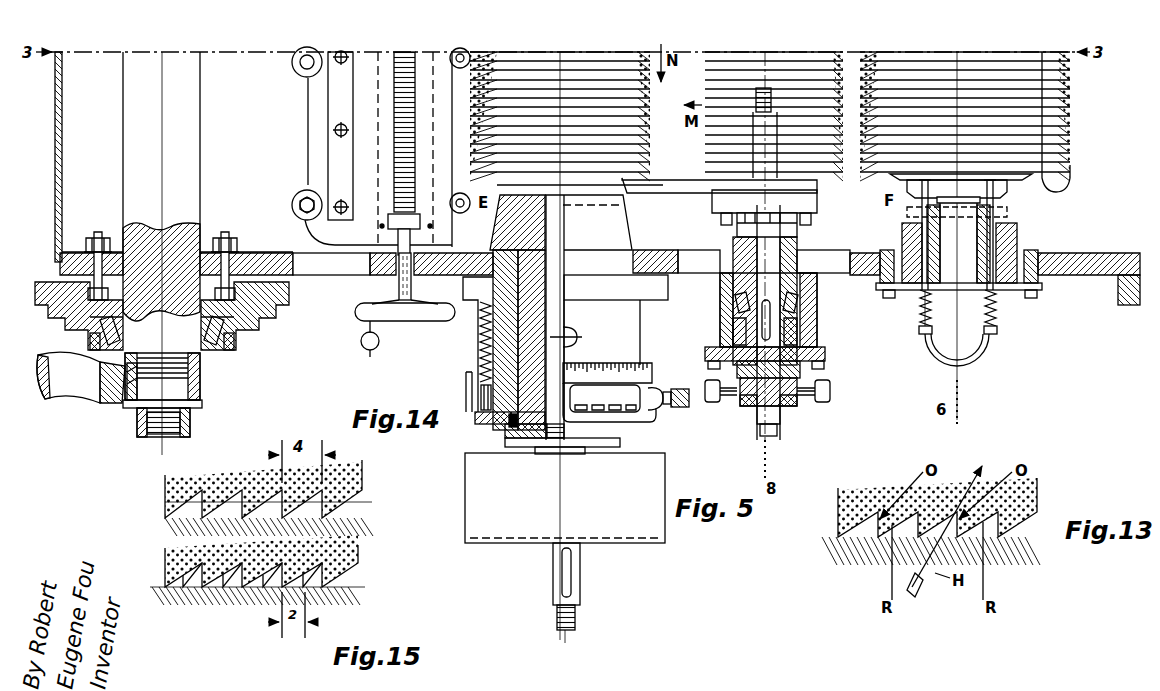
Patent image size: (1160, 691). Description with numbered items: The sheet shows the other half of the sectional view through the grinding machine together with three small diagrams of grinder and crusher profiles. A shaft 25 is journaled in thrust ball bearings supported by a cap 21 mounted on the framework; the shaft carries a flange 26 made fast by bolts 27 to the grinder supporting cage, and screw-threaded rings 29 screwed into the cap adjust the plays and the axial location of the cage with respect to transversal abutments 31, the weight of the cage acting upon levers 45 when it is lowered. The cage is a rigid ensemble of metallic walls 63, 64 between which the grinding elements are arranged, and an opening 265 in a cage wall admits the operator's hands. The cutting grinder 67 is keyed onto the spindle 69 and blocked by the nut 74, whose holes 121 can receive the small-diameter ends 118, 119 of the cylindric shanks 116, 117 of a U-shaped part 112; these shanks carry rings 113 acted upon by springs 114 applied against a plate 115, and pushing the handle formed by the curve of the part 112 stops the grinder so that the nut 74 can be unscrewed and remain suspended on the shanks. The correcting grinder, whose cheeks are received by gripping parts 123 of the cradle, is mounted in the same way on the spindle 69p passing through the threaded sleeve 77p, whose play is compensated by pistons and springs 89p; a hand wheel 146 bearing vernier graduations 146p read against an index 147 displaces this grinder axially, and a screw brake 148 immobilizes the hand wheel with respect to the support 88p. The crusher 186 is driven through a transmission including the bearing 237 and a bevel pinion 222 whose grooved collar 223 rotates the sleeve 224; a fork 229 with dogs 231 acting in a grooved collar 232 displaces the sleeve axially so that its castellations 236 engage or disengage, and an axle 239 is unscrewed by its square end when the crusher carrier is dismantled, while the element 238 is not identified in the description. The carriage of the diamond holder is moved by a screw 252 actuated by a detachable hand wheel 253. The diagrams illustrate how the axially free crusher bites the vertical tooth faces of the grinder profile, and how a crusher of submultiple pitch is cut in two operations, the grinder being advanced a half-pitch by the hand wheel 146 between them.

In FIG. 14, the shaft 25 is at (188, 113).
In FIG. 14, the flange 26 is at (201, 226).
In FIG. 14, the bolts 27 is at (98, 234).
In FIG. 14, the metallic wall 63 is at (267, 250).
In FIG. 5, the metallic wall 63 is at (1076, 266).
In FIG. 14, the metallic wall 64 is at (57, 200).
In FIG. 14, the cap 21 is at (268, 310).
In FIG. 14, the screw-threaded rings 29 is at (232, 352).
In FIG. 14, the levers 45 is at (77, 386).
In FIG. 14, the screw 252 is at (396, 153).
In FIG. 14, the detachable hand wheel 253 is at (370, 313).
In FIG. 14, the opening 265 is at (318, 258).
In FIG. 14, the spindle 69p is at (555, 316).
In FIG. 14, the threaded sleeve 77p is at (530, 354).
In FIG. 14, the pistons and springs 89p is at (495, 420).
In FIG. 5, the holes 121 is at (598, 104).
In FIG. 5, the crusher 186 is at (808, 124).
In FIG. 5, the gripping parts 123 is at (616, 184).
In FIG. 5, the cutting grinder 67 is at (1016, 139).
In FIG. 5, the nut 74 is at (1012, 191).
In FIG. 5, the portion of small diameter 118 is at (1008, 216).
In FIG. 5, the portion of small diameter 119 is at (907, 216).
In FIG. 5, the spindle 69 is at (1018, 237).
In FIG. 5, the cylindric rectilinear shank 116 is at (1019, 257).
In FIG. 5, the plate 115 is at (1012, 298).
In FIG. 5, the transversal abutments 31 is at (1127, 303).
In FIG. 5, the springs 114 is at (932, 309).
In FIG. 5, the rings 113 is at (997, 334).
In FIG. 5, the U-shaped part 112 is at (960, 358).
In FIG. 5, the cylindric rectilinear shank 117 is at (925, 296).
In FIG. 5, the castellations 236 is at (800, 231).
In FIG. 5, the bearing 237 is at (727, 286).
In FIG. 5, the support 88p is at (640, 283).
In FIG. 5, the bevel pinion 222 is at (806, 304).
In FIG. 5, the grooved collar 223 is at (792, 326).
In FIG. 5, the flange 238 is at (800, 363).
In FIG. 5, the sleeve 224 is at (752, 418).
In FIG. 5, the dogs 231 is at (742, 404).
In FIG. 5, the fork 229 is at (816, 399).
In FIG. 5, the grooved collar 232 is at (797, 403).
In FIG. 5, the axle 239 is at (773, 431).
In FIG. 5, the index 147 is at (572, 351).
In FIG. 5, the vernier graduations 146p is at (596, 368).
In FIG. 5, the hand wheel 146 is at (652, 371).
In FIG. 5, the screw brake 148 is at (673, 407).